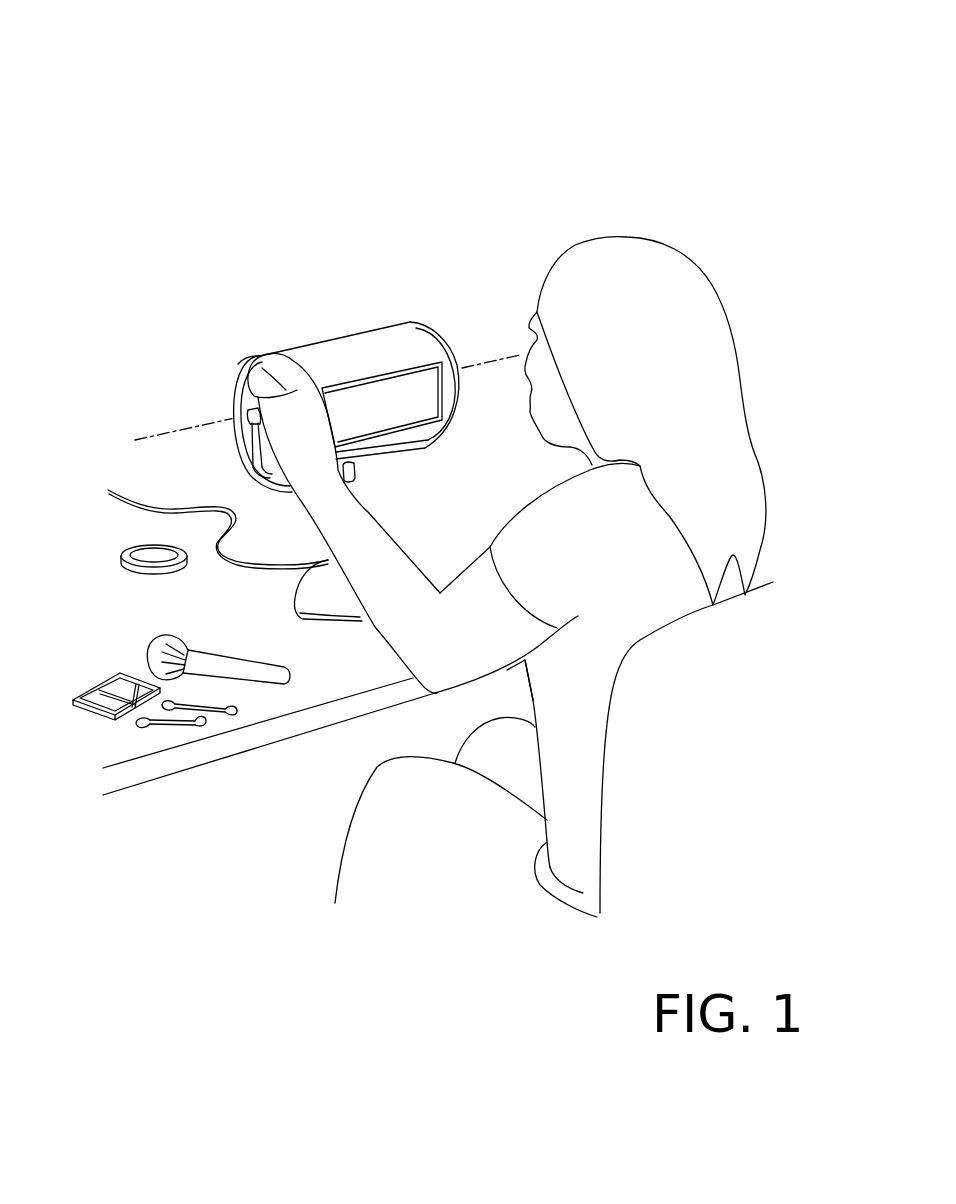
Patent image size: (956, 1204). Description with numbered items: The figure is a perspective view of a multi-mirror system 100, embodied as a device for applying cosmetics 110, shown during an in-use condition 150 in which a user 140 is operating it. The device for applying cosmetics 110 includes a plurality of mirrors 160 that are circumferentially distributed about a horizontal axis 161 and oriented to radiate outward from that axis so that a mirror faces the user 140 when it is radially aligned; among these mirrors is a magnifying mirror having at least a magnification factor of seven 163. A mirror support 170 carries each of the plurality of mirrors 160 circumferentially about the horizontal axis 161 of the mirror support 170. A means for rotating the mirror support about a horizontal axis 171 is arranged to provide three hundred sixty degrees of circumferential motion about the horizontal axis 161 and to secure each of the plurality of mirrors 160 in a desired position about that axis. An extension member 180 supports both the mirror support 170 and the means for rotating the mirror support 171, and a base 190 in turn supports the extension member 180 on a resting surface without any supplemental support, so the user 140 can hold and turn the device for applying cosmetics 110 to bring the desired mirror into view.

The multi-mirror system 100 is at (543, 87).
The device for applying cosmetics 110 is at (578, 115).
The in-use condition 150 is at (617, 150).
The user 140 is at (663, 283).
The mirror support 170 is at (395, 350).
The magnifying mirror having at least a magnification factor of seven 163 is at (402, 390).
The plurality of mirrors 160 is at (418, 392).
The extension member 180 is at (355, 478).
The means for rotating the mirror support about a horizontal axis 171 is at (245, 408).
The horizontal axis 161 is at (188, 425).
The base 190 is at (315, 581).